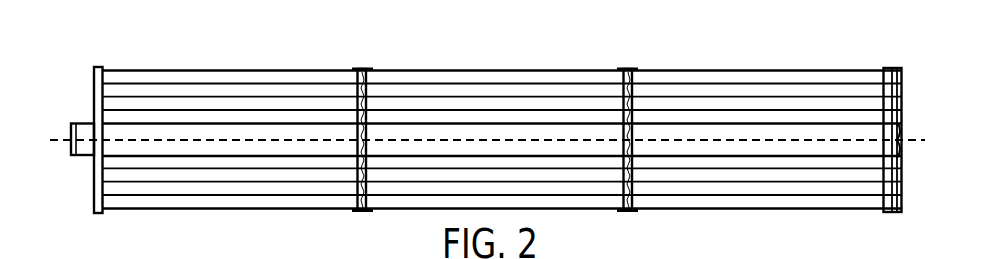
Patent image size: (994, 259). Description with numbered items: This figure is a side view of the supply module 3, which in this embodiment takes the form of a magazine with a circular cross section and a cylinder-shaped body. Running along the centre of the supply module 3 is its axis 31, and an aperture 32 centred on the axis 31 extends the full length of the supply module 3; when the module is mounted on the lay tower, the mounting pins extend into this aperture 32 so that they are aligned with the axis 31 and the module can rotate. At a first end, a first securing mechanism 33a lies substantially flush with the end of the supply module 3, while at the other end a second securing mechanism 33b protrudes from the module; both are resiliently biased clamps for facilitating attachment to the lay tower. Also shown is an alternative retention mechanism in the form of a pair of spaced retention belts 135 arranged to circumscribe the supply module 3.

The supply module 3 is at (778, 40).
The axis 31 is at (213, 137).
The aperture 32 is at (694, 123).
The retention belts 135 is at (365, 68).
The first securing mechanism 33a is at (902, 127).
The second securing mechanism 33b is at (73, 122).